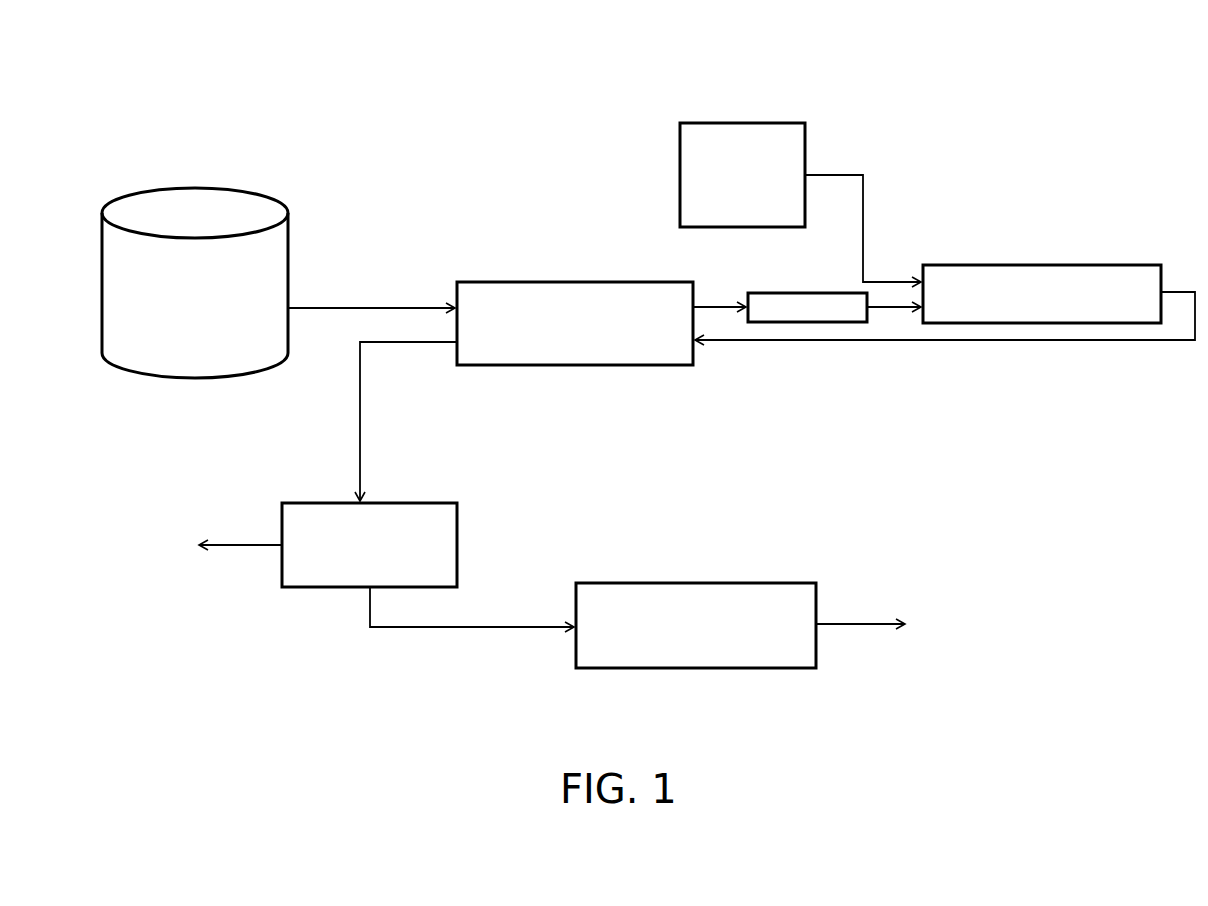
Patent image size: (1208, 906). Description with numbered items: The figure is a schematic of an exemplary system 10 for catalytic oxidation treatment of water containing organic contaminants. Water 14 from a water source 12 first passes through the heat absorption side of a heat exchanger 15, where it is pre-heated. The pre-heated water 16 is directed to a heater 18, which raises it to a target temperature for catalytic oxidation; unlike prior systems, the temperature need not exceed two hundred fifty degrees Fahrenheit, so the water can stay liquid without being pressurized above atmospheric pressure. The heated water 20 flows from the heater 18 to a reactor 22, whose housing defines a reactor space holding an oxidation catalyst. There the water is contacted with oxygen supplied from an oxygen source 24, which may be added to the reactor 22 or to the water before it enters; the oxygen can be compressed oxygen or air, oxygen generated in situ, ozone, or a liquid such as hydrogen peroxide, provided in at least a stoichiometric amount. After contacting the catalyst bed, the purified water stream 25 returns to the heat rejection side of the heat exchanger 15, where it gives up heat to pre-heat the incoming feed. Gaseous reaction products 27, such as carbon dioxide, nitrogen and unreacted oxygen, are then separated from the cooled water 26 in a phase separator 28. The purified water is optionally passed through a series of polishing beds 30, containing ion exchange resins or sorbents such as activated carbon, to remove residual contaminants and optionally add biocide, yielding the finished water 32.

The system 10 is at (1006, 96).
The water source 12 is at (288, 244).
The water 14 is at (388, 305).
The heat exchanger 15 is at (568, 366).
The pre-heated water 16 is at (722, 306).
The heater 18 is at (812, 293).
The heated water 20 is at (893, 305).
The reactor 22 is at (1014, 265).
The oxygen source 24 is at (680, 155).
The purified water stream 25 is at (977, 342).
The cooled water 26 is at (360, 423).
The gaseous reaction products 27 is at (236, 544).
The phase separator 28 is at (322, 590).
The polishing beds 30 is at (693, 583).
The finished water 32 is at (852, 624).